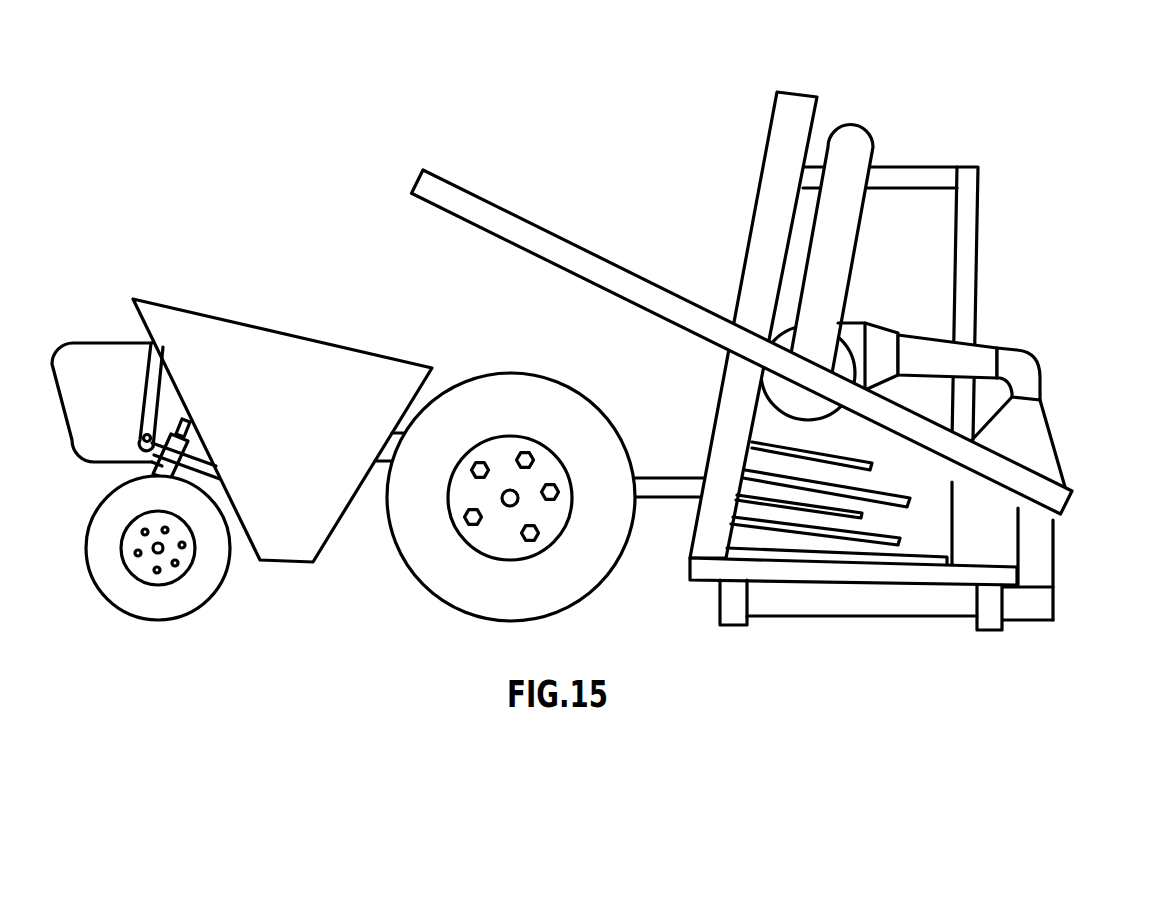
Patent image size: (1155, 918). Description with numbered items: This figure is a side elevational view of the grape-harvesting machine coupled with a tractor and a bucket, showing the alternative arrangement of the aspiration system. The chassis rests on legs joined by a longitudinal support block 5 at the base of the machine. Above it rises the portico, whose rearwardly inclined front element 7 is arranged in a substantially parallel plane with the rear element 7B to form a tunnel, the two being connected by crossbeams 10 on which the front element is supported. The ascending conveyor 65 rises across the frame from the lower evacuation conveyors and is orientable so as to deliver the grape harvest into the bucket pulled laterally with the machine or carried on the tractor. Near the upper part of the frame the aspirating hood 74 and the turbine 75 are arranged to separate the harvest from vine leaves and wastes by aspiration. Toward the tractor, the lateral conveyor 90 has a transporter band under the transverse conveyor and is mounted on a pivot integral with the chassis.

The longitudinal support block 5 is at (817, 618).
The front portico element 7 is at (787, 91).
The rear portico element 7B is at (963, 167).
The crossbeams 10 is at (891, 178).
The ascending conveyor 65 is at (622, 273).
The aspirating hood 74 is at (1050, 443).
The turbine 75 is at (847, 350).
The lateral conveyor 90 is at (242, 430).